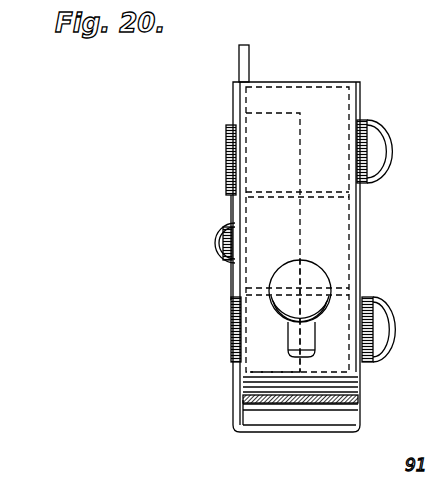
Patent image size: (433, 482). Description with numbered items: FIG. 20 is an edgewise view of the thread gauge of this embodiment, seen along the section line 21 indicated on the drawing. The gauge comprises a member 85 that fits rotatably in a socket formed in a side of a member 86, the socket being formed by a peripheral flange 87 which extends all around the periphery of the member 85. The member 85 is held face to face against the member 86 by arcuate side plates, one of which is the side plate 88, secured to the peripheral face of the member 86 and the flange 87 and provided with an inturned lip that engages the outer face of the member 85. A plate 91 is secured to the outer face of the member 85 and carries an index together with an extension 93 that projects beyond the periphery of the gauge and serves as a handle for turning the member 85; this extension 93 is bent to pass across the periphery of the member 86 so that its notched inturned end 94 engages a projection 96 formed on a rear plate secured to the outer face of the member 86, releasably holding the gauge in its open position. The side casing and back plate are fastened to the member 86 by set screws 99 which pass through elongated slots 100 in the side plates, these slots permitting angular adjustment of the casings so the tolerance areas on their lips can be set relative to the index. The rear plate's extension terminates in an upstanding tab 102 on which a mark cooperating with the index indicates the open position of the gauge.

The section line 21 is at (318, 15).
The member 85 is at (267, 133).
The member 86 is at (323, 137).
The peripheral flange 87 is at (258, 100).
The arcuate side plate 88 is at (333, 227).
The plate 91 is at (228, 152).
The extension 93 is at (233, 395).
The inturned end 94 is at (362, 418).
The projection 96 is at (367, 402).
The set screw 99 is at (312, 276).
The elongated slot 100 is at (295, 338).
The upstanding tab 102 is at (239, 58).